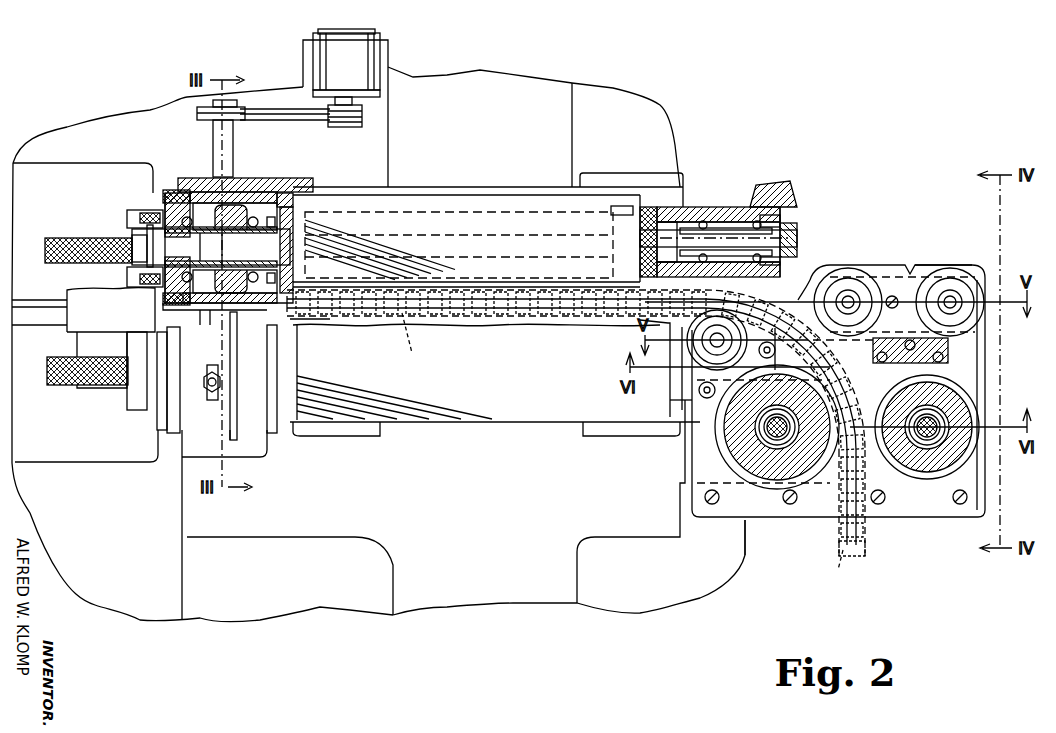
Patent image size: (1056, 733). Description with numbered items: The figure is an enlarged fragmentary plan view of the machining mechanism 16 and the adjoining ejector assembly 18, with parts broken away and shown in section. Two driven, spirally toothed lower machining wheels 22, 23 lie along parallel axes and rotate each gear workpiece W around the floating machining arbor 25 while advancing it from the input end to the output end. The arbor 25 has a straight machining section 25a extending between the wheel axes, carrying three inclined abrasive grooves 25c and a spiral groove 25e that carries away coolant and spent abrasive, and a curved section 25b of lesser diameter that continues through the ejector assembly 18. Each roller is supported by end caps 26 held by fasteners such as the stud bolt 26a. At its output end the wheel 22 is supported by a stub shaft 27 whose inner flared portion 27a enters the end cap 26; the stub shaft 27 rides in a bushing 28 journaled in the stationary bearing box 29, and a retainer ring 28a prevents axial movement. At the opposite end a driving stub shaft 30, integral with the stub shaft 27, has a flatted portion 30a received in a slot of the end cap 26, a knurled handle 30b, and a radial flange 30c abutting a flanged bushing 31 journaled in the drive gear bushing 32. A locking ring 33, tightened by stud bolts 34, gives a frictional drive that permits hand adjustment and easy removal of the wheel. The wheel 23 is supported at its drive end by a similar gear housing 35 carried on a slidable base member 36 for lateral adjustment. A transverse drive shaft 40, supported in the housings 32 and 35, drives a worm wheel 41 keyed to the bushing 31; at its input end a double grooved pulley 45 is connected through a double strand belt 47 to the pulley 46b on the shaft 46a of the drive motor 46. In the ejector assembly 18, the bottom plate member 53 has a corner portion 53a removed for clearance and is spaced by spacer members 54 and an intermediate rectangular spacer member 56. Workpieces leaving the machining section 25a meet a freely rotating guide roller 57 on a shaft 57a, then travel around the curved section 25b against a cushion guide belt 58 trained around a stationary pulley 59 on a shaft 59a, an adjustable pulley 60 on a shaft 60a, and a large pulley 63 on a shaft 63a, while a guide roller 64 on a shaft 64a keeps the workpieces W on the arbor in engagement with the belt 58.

The machining mechanism 16 is at (485, 158).
The ejector assembly 18 is at (870, 250).
The lower machining wheel 22 is at (530, 195).
The lower machining wheel 23 is at (523, 418).
The machining arbor 25 is at (292, 328).
The machining section 25a is at (470, 317).
The curved arbor section 25b is at (862, 523).
The grooves 25c is at (307, 326).
The spiral groove 25e is at (815, 273).
The end supporting caps 26 is at (283, 205).
The stud bolt 26a is at (686, 210).
The stub shaft 27 is at (763, 191).
The inner flared portion 27a is at (665, 238).
The bushing 28 is at (728, 233).
The retainer ring 28a is at (782, 236).
The bearing box 29 is at (763, 197).
The driving stub shaft 30 is at (167, 213).
The flatted portion 30a is at (282, 248).
The knurled handle 30b is at (68, 238).
The radial flange 30c is at (158, 254).
The flanged bushing 31 is at (201, 235).
The drive gear bushing 32 is at (178, 178).
The locking ring 33 is at (127, 236).
The stud bolts 34 is at (130, 207).
The gear housing 35 is at (195, 441).
The slidable base member 36 is at (373, 522).
The drive shaft 40 is at (210, 146).
The worm wheel 41 is at (233, 208).
The double grooved pulley 45 is at (236, 104).
The drive motor 46 is at (381, 62).
The motor shaft 46a is at (354, 102).
The motor pulley 46b is at (364, 113).
The double strand belt 47 is at (312, 123).
The bottom plate member 53 is at (942, 506).
The removed corner portion 53a is at (812, 277).
The spacer member 54 is at (714, 387).
The rectangular spacer member 56 is at (948, 351).
The guide roller 57 is at (695, 348).
The guide roller shaft 57a is at (715, 343).
The cushion guide belt 58 is at (935, 265).
The stationary pulley 59 is at (848, 290).
The pulley shaft 59a is at (856, 300).
The adjustable pulley 60 is at (953, 303).
The adjustable pulley shaft 60a is at (953, 299).
The large pulley 63 is at (963, 413).
The large pulley shaft 63a is at (935, 432).
The guide roller 64 is at (775, 470).
The guide roller shaft 64a is at (773, 430).
The workpiece W is at (624, 451).